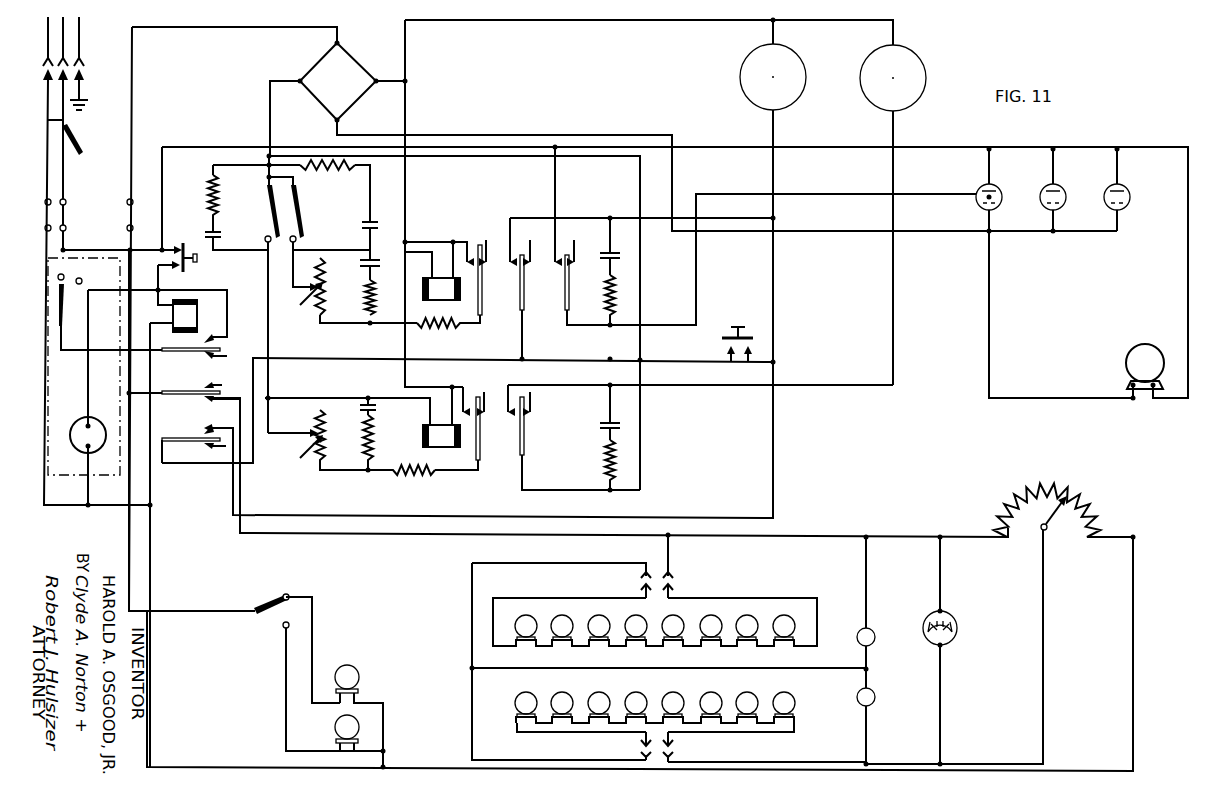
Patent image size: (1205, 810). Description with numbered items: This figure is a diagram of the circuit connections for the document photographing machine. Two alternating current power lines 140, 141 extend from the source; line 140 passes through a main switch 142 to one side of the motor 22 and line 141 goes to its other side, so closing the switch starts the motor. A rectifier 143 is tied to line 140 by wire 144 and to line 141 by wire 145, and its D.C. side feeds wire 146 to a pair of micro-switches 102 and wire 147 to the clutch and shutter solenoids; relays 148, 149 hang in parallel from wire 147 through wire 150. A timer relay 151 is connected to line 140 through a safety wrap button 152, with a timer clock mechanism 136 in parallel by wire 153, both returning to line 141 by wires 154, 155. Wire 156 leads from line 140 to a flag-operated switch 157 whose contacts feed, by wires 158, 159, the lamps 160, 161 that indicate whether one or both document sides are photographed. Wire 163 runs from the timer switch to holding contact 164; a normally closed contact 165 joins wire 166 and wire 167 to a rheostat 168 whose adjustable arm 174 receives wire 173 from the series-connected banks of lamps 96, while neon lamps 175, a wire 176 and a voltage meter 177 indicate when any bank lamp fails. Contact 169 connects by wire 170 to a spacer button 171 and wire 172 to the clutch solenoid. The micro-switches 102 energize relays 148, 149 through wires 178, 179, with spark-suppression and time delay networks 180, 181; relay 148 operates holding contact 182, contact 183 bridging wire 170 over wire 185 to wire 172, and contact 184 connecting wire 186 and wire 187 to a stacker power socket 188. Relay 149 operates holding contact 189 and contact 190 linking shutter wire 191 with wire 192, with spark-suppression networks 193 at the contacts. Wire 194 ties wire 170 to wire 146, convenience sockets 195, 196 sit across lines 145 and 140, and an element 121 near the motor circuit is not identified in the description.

The motor 22 is at (1146, 346).
The banks of lamps 96 is at (712, 616).
The micro-switches 102 is at (280, 213).
The meter 121 is at (915, 66).
The timer clock mechanism 136 is at (82, 424).
The power line 140 is at (86, 97).
The power line 141 is at (78, 118).
The main switch 142 is at (85, 153).
The rectifier 143 is at (318, 66).
The wire 144 is at (240, 30).
The wire 145 is at (518, 135).
The wire 146 is at (268, 106).
The wire 147 is at (395, 80).
The relay 148 is at (441, 278).
The relay 149 is at (446, 448).
The wire 150 is at (406, 196).
The timer relay 151 is at (190, 313).
The safety wrap button 152 is at (183, 243).
The wire 153 is at (89, 343).
The wire 154 is at (89, 501).
The wire 155 is at (150, 472).
The wire 156 is at (129, 290).
The switch 157 is at (262, 618).
The wire 158 is at (286, 678).
The wire 159 is at (313, 656).
The lamp 160 is at (336, 726).
The lamp 161 is at (356, 670).
The wire 163 is at (62, 352).
The holding contact 164 is at (215, 346).
The normally closed contact 165 is at (218, 390).
The wire 166 is at (136, 393).
The wire 167 is at (403, 538).
The rheostat 168 is at (1032, 484).
The normally open contact 169 is at (206, 437).
The wire 170 is at (343, 358).
The spacer button 171 is at (757, 344).
The wire 172 is at (776, 298).
The wire 173 is at (1043, 652).
The adjustable arm 174 is at (1047, 531).
The neon lamps 175 is at (876, 696).
The wire 176 is at (824, 668).
The voltage meter 177 is at (950, 618).
The wire 178 is at (347, 250).
The wire 179 is at (265, 356).
The spark-suppression and time delay network 180 is at (313, 283).
The spark-suppression and time delay network 181 is at (302, 466).
The contact 182 is at (479, 245).
The contact 183 is at (519, 238).
The contact 184 is at (566, 238).
The wire 185 is at (615, 225).
The wire 186 is at (555, 175).
The wire 187 is at (665, 325).
The power socket 188 is at (977, 194).
The contact 189 is at (476, 396).
The contact 190 is at (522, 396).
The wire 191 is at (893, 284).
The wire 192 is at (641, 437).
The spark-suppression networks 193 is at (598, 284).
The wire 194 is at (640, 268).
The convenience socket 195 is at (1060, 196).
The convenience socket 196 is at (1124, 196).